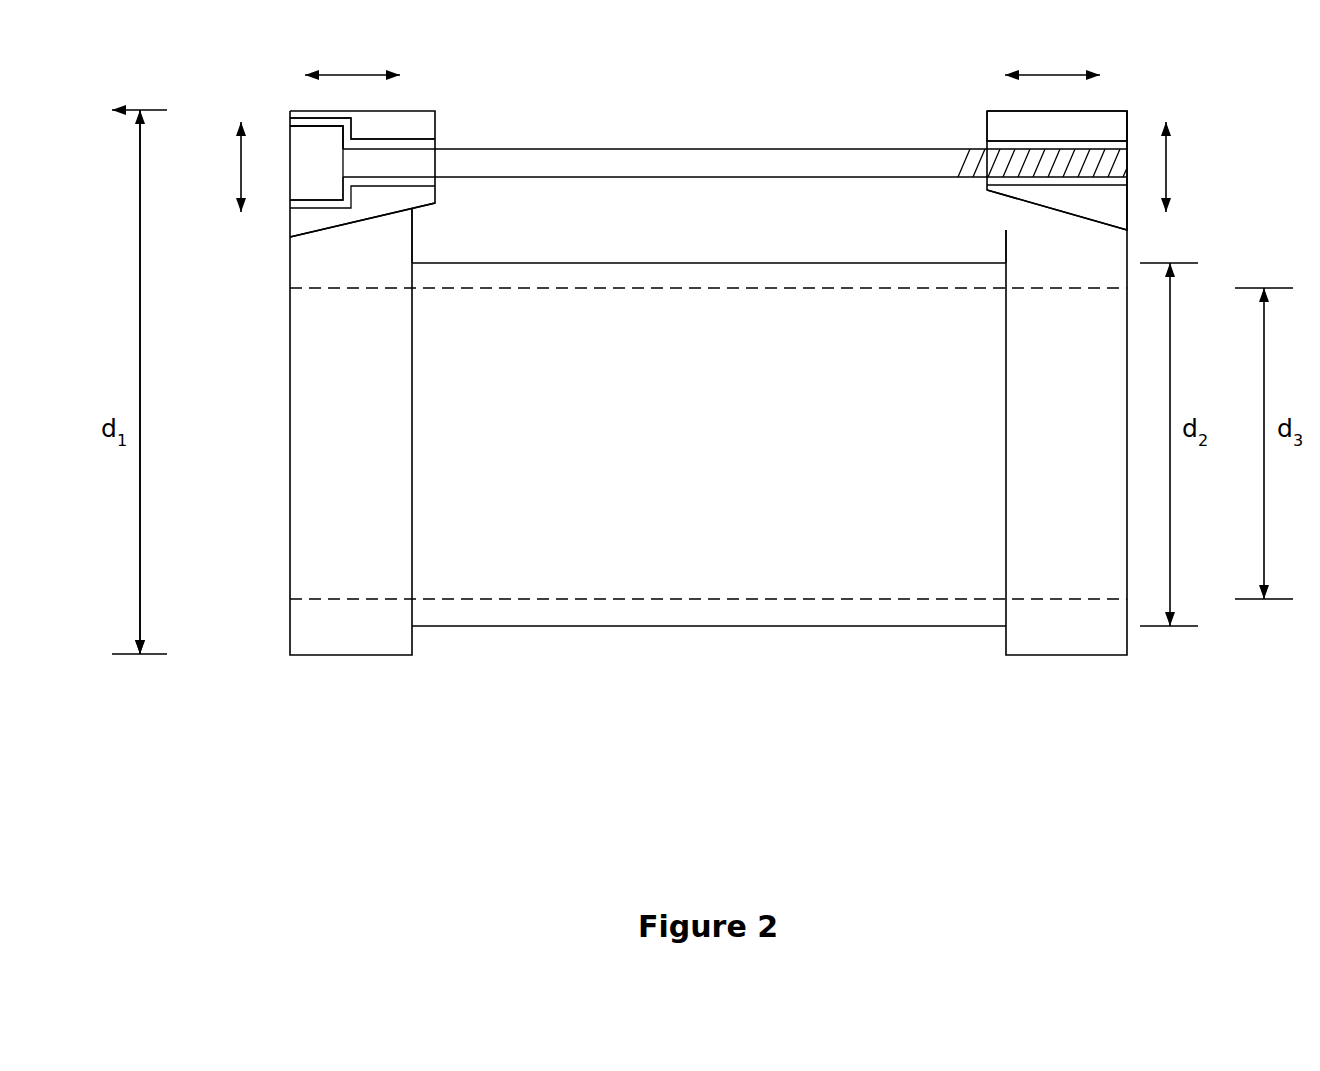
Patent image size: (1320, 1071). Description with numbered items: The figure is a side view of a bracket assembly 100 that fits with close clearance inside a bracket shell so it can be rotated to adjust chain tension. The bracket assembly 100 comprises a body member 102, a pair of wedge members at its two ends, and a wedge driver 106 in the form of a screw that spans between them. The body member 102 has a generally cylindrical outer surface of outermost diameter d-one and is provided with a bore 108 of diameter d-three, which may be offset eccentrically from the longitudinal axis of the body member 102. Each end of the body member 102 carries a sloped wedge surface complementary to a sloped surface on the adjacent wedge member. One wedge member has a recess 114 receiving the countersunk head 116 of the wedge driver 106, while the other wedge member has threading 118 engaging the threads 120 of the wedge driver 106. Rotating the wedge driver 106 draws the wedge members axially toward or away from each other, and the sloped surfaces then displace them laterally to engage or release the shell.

The bracket assembly 100 is at (708, 461).
The body member 102 is at (530, 610).
The wedge driver 106 is at (652, 162).
The bore 108 is at (733, 573).
The recess 114 is at (320, 128).
The head 116 is at (298, 150).
The threading 118 is at (1018, 148).
The threads 120 is at (1086, 153).